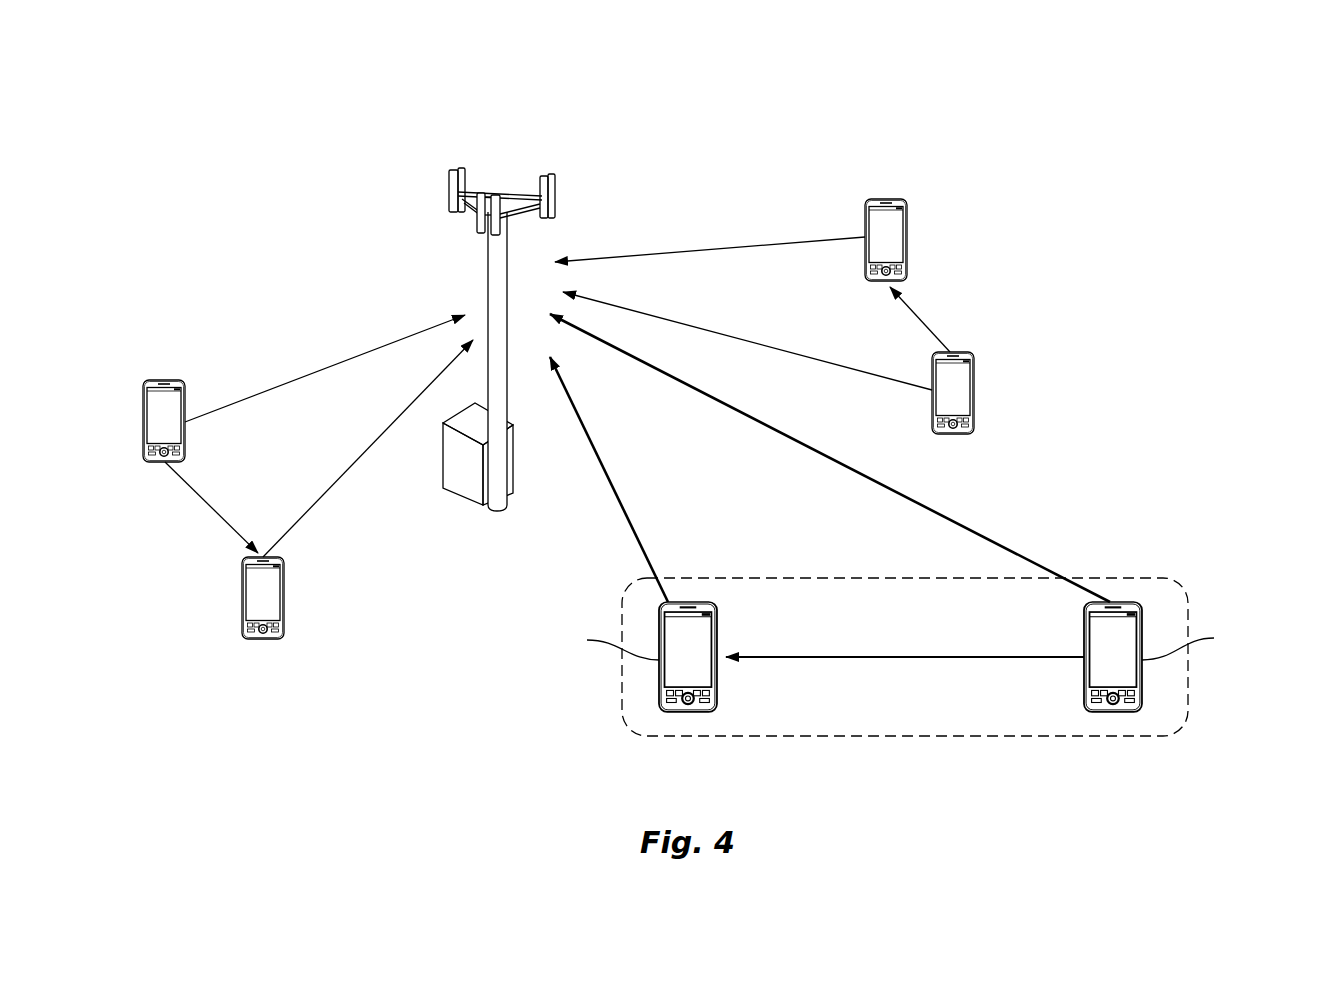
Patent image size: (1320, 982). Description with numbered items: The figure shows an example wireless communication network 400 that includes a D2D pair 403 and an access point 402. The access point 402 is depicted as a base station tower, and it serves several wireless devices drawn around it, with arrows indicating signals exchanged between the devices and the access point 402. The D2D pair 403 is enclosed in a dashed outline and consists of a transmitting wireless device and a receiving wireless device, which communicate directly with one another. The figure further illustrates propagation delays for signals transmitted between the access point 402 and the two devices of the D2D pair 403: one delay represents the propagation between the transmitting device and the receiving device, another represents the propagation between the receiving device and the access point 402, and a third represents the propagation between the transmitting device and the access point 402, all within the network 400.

The wireless communication network 400 is at (1060, 112).
The access point 402 is at (484, 148).
The D2D pair 403 is at (922, 748).